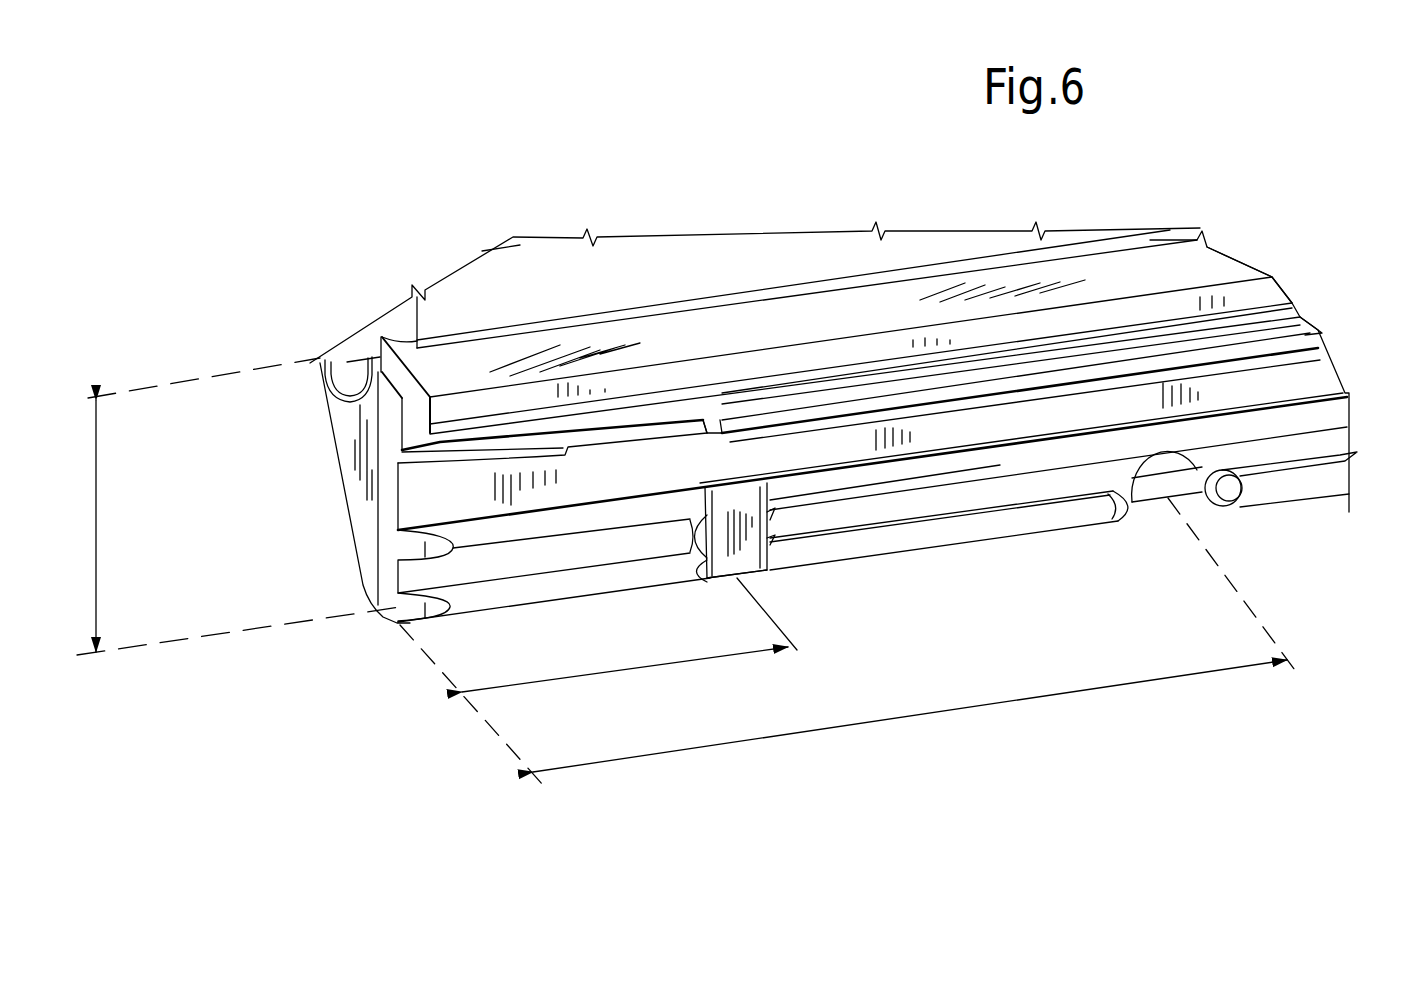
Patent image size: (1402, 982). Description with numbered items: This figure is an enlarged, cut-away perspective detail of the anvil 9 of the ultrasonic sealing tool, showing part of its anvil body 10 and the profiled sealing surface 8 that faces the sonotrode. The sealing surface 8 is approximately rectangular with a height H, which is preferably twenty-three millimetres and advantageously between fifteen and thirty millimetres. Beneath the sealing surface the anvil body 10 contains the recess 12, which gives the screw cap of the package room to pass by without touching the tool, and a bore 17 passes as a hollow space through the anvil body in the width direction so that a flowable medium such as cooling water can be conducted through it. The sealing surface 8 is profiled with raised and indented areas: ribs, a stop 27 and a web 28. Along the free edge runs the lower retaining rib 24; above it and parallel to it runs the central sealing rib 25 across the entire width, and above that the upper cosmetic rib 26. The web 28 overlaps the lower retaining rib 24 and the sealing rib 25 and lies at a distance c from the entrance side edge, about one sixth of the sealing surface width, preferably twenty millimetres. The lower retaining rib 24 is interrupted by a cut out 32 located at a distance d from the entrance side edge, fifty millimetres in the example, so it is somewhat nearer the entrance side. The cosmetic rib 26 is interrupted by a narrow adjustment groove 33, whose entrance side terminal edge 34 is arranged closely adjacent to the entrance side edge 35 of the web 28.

The sealing surface 8 is at (402, 447).
The anvil 9 is at (829, 311).
The anvil body 10 is at (540, 267).
The recess 12 is at (420, 426).
The bore 17 is at (350, 350).
The lower retaining rib 24 is at (903, 537).
The central sealing rib 25 is at (982, 460).
The upper cosmetic rib 26 is at (1315, 330).
The stop 27 is at (1263, 292).
The web 28 is at (750, 548).
The cut out 32 is at (1162, 478).
The adjustment groove 33 is at (717, 420).
The entrance side terminal edge of the adjustment groove 34 is at (706, 420).
The entrance side edge of the web 35 is at (703, 577).
The height of the sealing surface H is at (97, 535).
The distance c is at (627, 668).
The distance d is at (903, 707).